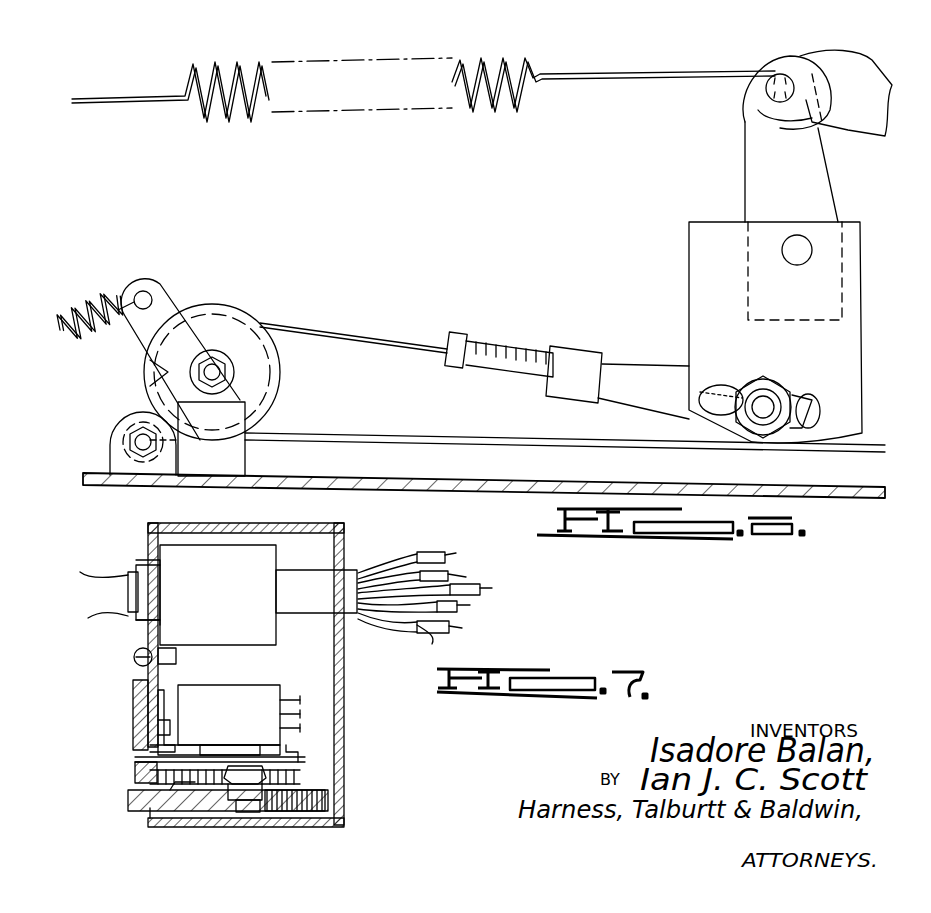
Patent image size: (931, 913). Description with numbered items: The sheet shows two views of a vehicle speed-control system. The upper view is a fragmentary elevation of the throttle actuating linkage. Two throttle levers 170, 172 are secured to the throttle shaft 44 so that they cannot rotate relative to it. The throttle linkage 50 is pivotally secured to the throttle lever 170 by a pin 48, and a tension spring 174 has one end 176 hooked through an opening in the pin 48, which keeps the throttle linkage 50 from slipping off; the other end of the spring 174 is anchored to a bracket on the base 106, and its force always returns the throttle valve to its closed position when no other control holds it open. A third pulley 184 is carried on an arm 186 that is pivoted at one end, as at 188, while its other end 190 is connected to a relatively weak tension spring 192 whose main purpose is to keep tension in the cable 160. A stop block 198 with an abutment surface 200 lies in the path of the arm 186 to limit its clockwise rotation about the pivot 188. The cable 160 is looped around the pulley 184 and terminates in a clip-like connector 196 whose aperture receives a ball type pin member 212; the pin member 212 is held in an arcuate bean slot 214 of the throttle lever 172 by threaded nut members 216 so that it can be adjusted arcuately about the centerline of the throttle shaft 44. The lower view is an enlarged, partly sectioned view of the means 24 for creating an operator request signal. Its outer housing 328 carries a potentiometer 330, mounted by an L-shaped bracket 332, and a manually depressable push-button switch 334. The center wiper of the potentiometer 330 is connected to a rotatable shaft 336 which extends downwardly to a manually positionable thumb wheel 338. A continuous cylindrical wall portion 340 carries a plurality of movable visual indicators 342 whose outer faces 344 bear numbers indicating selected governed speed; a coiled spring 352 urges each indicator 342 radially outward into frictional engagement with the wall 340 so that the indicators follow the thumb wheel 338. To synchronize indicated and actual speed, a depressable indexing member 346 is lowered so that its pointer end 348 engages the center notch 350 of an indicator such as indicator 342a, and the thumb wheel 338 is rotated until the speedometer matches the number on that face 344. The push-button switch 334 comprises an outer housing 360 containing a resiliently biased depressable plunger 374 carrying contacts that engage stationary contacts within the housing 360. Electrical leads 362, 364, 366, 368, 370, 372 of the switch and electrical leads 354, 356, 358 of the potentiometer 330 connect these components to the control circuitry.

In FIG. 7, the means for creating an operator request signal 24 is at (352, 690).
In FIG. 5, the throttle shaft 44 is at (783, 242).
In FIG. 5, the pin 48 is at (803, 66).
In FIG. 5, the throttle linkage 50 is at (858, 76).
In FIG. 5, the base 106 is at (445, 482).
In FIG. 5, the cable 160 is at (382, 347).
In FIG. 5, the throttle lever 170 is at (730, 112).
In FIG. 5, the throttle lever 172 is at (688, 283).
In FIG. 5, the tension spring 174 is at (497, 108).
In FIG. 5, the end of spring 176 is at (748, 134).
In FIG. 5, the third pulley 184 is at (230, 318).
In FIG. 5, the arm 186 is at (164, 372).
In FIG. 5, the pivot 188 is at (141, 428).
In FIG. 5, the other end of arm 190 is at (146, 278).
In FIG. 5, the tension spring 192 is at (94, 290).
In FIG. 5, the connector 196 is at (615, 352).
In FIG. 5, the stop block 198 is at (245, 455).
In FIG. 5, the abutment surface 200 is at (262, 405).
In FIG. 5, the ball type pin member 212 is at (805, 402).
In FIG. 5, the bean slot 214 is at (728, 390).
In FIG. 5, the threaded nut member 216 is at (768, 386).
In FIG. 7, the outer housing 328 is at (345, 808).
In FIG. 7, the potentiometer 330 is at (272, 685).
In FIG. 7, the L-shaped bracket 332 is at (168, 748).
In FIG. 7, the push-button type switch 334 is at (118, 628).
In FIG. 7, the rotatable shaft 336 is at (248, 815).
In FIG. 7, the thumb wheel 338 is at (305, 812).
In FIG. 7, the cylindrical wall portion 340 is at (148, 812).
In FIG. 7, the movable visual indicators 342 is at (130, 795).
In FIG. 7, the indicator 342a is at (134, 752).
In FIG. 7, the outer face 344 is at (134, 772).
In FIG. 7, the depressable indexing member 346 is at (132, 700).
In FIG. 7, the pointer end 348 is at (134, 734).
In FIG. 7, the center notch 350 is at (300, 760).
In FIG. 7, the coiled spring 352 is at (168, 822).
In FIG. 7, the electrical lead 354 is at (300, 700).
In FIG. 7, the electrical lead 356 is at (300, 714).
In FIG. 7, the electrical lead 358 is at (300, 728).
In FIG. 7, the outer housing 360 is at (268, 544).
In FIG. 7, the electrical lead 362 is at (446, 550).
In FIG. 7, the electrical lead 364 is at (470, 562).
In FIG. 7, the electrical lead 366 is at (495, 586).
In FIG. 7, the electrical lead 368 is at (462, 606).
In FIG. 7, the electrical lead 370 is at (465, 629).
In FIG. 7, the electrical lead 372 is at (430, 612).
In FIG. 7, the plunger 374 is at (90, 572).